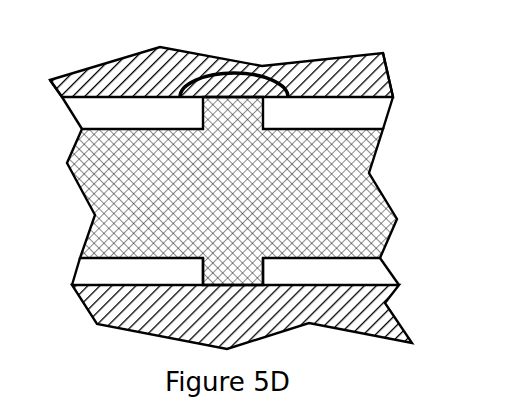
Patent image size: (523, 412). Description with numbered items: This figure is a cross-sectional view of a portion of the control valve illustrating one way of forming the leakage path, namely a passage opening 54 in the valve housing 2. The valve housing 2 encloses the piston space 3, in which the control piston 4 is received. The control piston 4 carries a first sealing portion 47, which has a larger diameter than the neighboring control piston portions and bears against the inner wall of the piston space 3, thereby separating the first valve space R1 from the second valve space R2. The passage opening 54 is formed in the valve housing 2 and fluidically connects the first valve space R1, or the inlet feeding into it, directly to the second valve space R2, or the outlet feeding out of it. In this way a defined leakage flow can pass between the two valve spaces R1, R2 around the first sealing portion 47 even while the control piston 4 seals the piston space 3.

The valve housing 2 is at (333, 63).
The piston space 3 is at (93, 284).
The control piston 4 is at (83, 175).
The first sealing portion 47 is at (230, 284).
The passage opening 54 is at (258, 80).
The first valve space R1 is at (134, 105).
The second valve space R2 is at (373, 107).